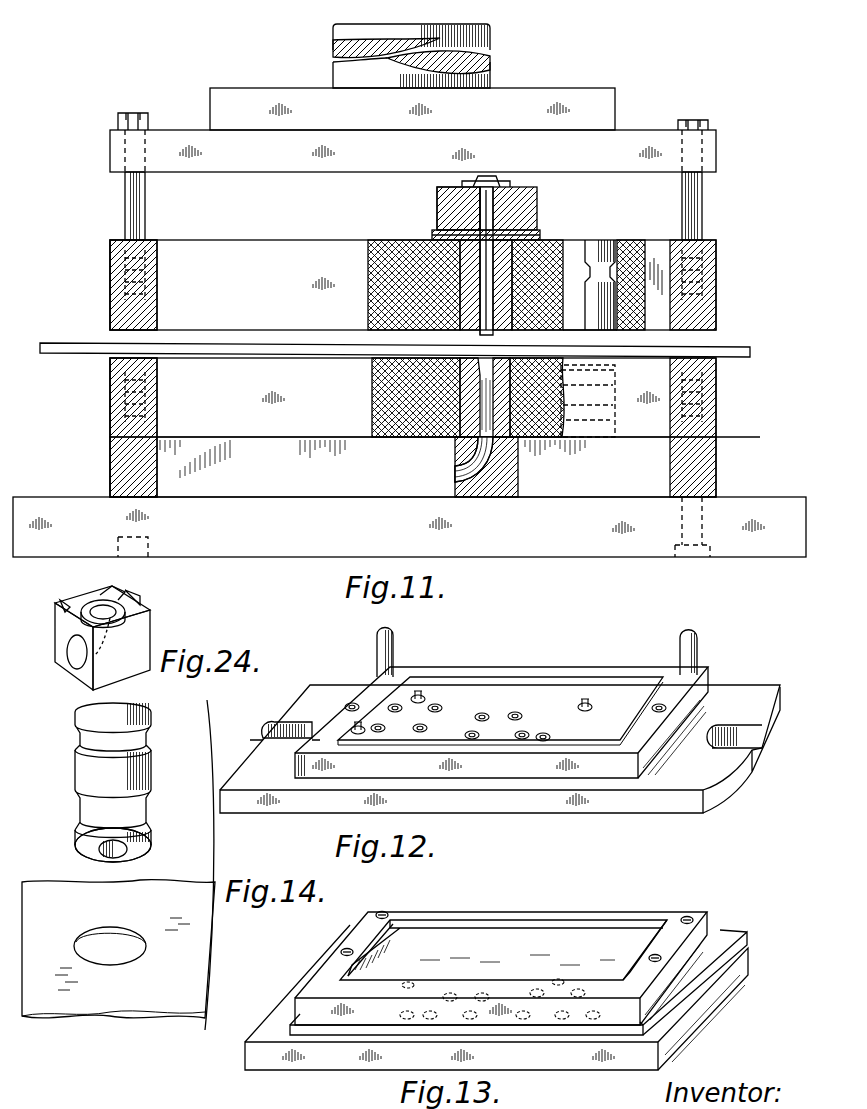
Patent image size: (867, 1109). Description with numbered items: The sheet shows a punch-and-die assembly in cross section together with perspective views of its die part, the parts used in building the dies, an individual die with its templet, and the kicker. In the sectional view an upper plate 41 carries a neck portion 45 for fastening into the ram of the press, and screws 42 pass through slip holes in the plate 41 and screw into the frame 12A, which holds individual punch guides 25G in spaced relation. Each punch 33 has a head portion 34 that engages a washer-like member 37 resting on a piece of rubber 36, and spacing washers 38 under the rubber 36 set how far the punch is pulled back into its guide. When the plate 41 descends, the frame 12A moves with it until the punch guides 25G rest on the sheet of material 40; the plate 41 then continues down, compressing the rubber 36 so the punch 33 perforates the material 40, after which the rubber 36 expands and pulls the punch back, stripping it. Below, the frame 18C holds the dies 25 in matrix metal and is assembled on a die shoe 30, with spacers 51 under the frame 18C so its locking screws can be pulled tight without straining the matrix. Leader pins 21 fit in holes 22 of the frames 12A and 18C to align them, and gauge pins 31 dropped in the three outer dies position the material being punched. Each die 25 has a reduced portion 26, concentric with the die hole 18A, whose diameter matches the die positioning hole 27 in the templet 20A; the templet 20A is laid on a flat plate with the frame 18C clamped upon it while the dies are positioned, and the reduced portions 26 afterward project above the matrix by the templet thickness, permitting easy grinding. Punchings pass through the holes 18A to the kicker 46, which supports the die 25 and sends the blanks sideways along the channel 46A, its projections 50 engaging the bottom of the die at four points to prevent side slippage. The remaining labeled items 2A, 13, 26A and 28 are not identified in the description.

In FIG. 13, the base plate 2A is at (715, 992).
In FIG. 11, the supporting frame 12A is at (716, 287).
In FIG. 11, the resilient stripper pad 13 is at (384, 263).
In FIG. 12, the resilient stripper pad 13 is at (500, 711).
In FIG. 11, the die hole 18A is at (482, 362).
In FIG. 11, the supporting frame 18C is at (718, 402).
In FIG. 12, the supporting frame 18C is at (710, 681).
In FIG. 13, the supporting frame 18C is at (660, 917).
In FIG. 13, the templet plate 20A is at (726, 934).
In FIG. 12, the leader pins 21 is at (394, 645).
In FIG. 13, the holes 22 is at (384, 912).
In FIG. 11, the die 25 is at (622, 387).
In FIG. 14, the die 25 is at (153, 737).
In FIG. 11, the punch guide 25G is at (600, 248).
In FIG. 11, the reduced portion 26 is at (462, 332).
In FIG. 14, the reduced portion 26 is at (78, 846).
In FIG. 14, the groove 26A is at (152, 756).
In FIG. 14, the die positioning hole 27 is at (128, 955).
In FIG. 14, the center hole 28 is at (125, 853).
In FIG. 11, the die shoe 30 is at (740, 510).
In FIG. 12, the die shoe 30 is at (665, 805).
In FIG. 12, the gauge pins 31 is at (355, 720).
In FIG. 11, the punch 33 is at (537, 205).
In FIG. 11, the head portion 34 is at (491, 177).
In FIG. 11, the rubber 36 is at (437, 205).
In FIG. 11, the washer-like member 37 is at (518, 187).
In FIG. 11, the spacing washers 38 is at (540, 233).
In FIG. 11, the sheet of material 40 is at (753, 349).
In FIG. 11, the plate 41 is at (628, 130).
In FIG. 11, the screws 42 is at (147, 116).
In FIG. 11, the neck portion 45 is at (490, 40).
In FIG. 11, the kicker 46 is at (522, 490).
In FIG. 24, the kicker 46 is at (80, 665).
In FIG. 11, the channel 46A is at (470, 476).
In FIG. 24, the channel 46A is at (95, 603).
In FIG. 24, the projections 50 is at (126, 592).
In FIG. 11, the spacers 51 is at (112, 465).